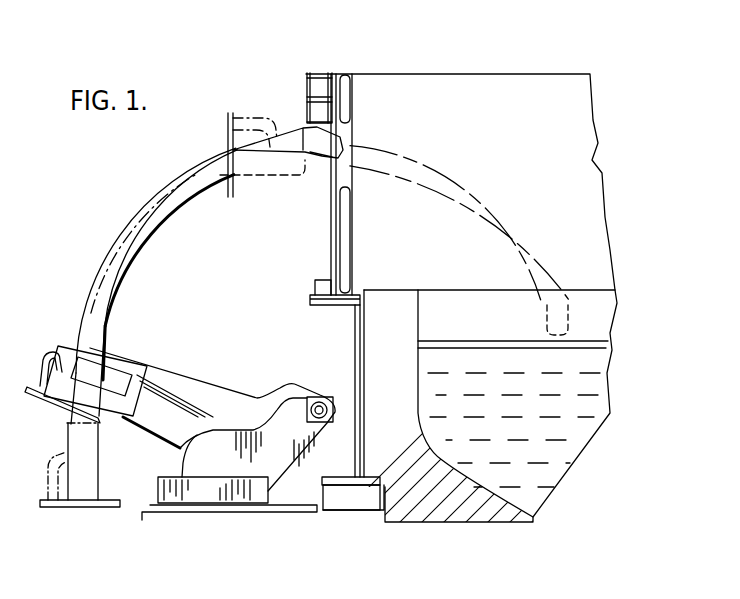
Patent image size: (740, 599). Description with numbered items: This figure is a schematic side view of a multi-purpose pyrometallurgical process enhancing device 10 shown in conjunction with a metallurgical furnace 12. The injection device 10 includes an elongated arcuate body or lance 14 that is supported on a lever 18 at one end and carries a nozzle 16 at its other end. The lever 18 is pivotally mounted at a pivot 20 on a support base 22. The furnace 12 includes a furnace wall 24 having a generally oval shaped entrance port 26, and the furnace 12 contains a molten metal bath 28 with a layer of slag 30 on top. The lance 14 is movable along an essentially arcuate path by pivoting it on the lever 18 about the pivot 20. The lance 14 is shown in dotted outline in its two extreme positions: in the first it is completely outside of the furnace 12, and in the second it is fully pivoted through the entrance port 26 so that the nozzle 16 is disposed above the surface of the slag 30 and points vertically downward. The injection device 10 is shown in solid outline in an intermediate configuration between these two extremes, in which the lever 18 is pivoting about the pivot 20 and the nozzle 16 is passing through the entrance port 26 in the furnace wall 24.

The pyrometallurgical process enhancing device 10 is at (95, 266).
The metallurgical furnace 12 is at (431, 66).
The lance 14 is at (190, 172).
The nozzle 16 is at (348, 130).
The lever 18 is at (188, 380).
The pivot 20 is at (327, 397).
The support base 22 is at (272, 486).
The furnace wall 24 is at (330, 233).
The entrance port 26 is at (328, 186).
The molten metal bath 28 is at (583, 421).
The slag 30 is at (603, 342).